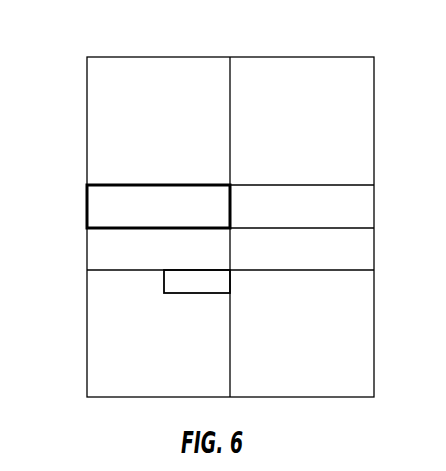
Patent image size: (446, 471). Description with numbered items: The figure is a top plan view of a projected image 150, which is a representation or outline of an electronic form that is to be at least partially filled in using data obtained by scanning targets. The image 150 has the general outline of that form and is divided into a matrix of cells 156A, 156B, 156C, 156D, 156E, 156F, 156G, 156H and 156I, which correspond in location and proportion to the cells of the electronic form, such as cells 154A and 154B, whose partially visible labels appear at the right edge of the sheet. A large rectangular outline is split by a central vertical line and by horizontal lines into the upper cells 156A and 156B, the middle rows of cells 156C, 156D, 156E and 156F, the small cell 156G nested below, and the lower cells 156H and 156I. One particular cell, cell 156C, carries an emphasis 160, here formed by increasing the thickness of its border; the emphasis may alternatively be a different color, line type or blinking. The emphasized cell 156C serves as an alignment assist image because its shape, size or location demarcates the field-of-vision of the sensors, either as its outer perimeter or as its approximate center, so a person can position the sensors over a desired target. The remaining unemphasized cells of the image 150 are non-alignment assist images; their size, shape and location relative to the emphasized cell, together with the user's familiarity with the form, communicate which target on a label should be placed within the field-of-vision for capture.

The projected image 150 is at (82, 88).
The cell 154A is at (445, 68).
The cell 154B is at (429, 245).
The cell 156A is at (88, 130).
The cell 156B is at (305, 68).
The cell 156C is at (90, 205).
The cell 156D is at (365, 212).
The cell 156E is at (97, 247).
The cell 156F is at (365, 256).
The cell 156G is at (205, 282).
The cell 156H is at (90, 345).
The cell 156I is at (364, 382).
The emphasis 160 is at (84, 212).